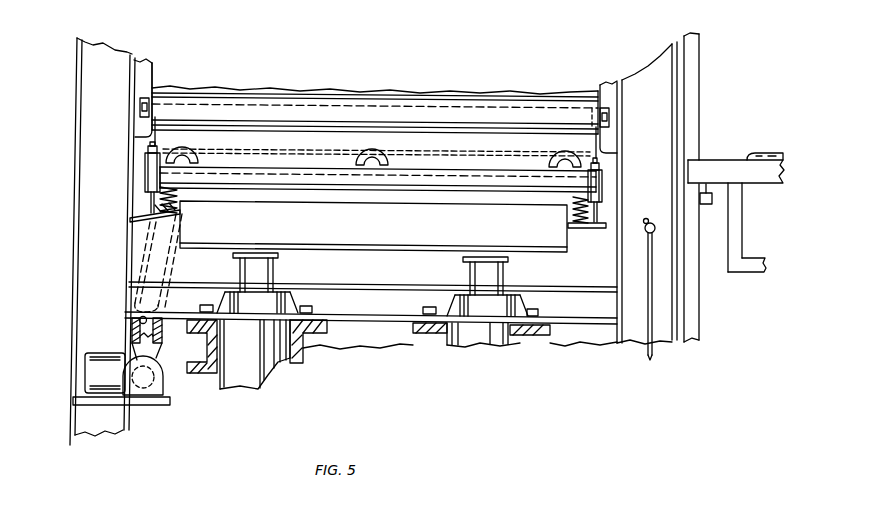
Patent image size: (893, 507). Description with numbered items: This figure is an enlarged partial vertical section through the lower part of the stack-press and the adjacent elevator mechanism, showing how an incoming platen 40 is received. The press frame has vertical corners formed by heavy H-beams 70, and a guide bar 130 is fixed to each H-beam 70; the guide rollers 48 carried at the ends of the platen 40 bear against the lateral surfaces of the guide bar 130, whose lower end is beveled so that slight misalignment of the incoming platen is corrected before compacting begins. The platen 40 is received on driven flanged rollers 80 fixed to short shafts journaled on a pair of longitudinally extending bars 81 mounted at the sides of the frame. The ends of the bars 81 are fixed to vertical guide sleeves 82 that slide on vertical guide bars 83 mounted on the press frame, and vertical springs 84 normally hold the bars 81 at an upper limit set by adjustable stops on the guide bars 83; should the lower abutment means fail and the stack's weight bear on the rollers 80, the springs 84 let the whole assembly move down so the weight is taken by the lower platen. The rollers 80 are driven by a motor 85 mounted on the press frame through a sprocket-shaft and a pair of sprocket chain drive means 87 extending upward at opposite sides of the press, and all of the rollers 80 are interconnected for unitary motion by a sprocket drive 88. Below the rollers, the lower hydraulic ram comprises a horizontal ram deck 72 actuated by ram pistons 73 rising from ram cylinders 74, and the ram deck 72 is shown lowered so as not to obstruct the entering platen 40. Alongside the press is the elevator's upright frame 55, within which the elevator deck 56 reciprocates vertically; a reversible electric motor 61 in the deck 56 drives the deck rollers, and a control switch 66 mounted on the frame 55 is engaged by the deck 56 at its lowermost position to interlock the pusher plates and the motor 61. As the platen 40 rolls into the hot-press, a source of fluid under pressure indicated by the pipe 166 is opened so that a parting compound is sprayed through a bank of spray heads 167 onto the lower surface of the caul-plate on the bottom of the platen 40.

The platen 40 is at (323, 118).
The guide rollers 48 is at (140, 107).
The upright frame 55 is at (693, 110).
The elevator deck 56 is at (727, 172).
The reversible electric motor 61 is at (749, 9).
The control switch 66 is at (706, 206).
The H-beams 70 is at (93, 56).
The ram deck 72 is at (373, 238).
The ram pistons 73 is at (252, 265).
The ram cylinders 74 is at (258, 360).
The driven flanged rollers 80 is at (188, 148).
The longitudinally extending bars 81 is at (332, 182).
The vertical guide sleeves 82 is at (147, 172).
The vertical guide bars 83 is at (160, 205).
The vertical springs 84 is at (153, 214).
The motor 85 is at (105, 378).
The sprocket chain drive means 87 is at (127, 327).
The sprocket drive 88 is at (300, 150).
The guide bar 130 is at (149, 64).
The pipe 166 is at (648, 352).
The spray heads 167 is at (654, 232).